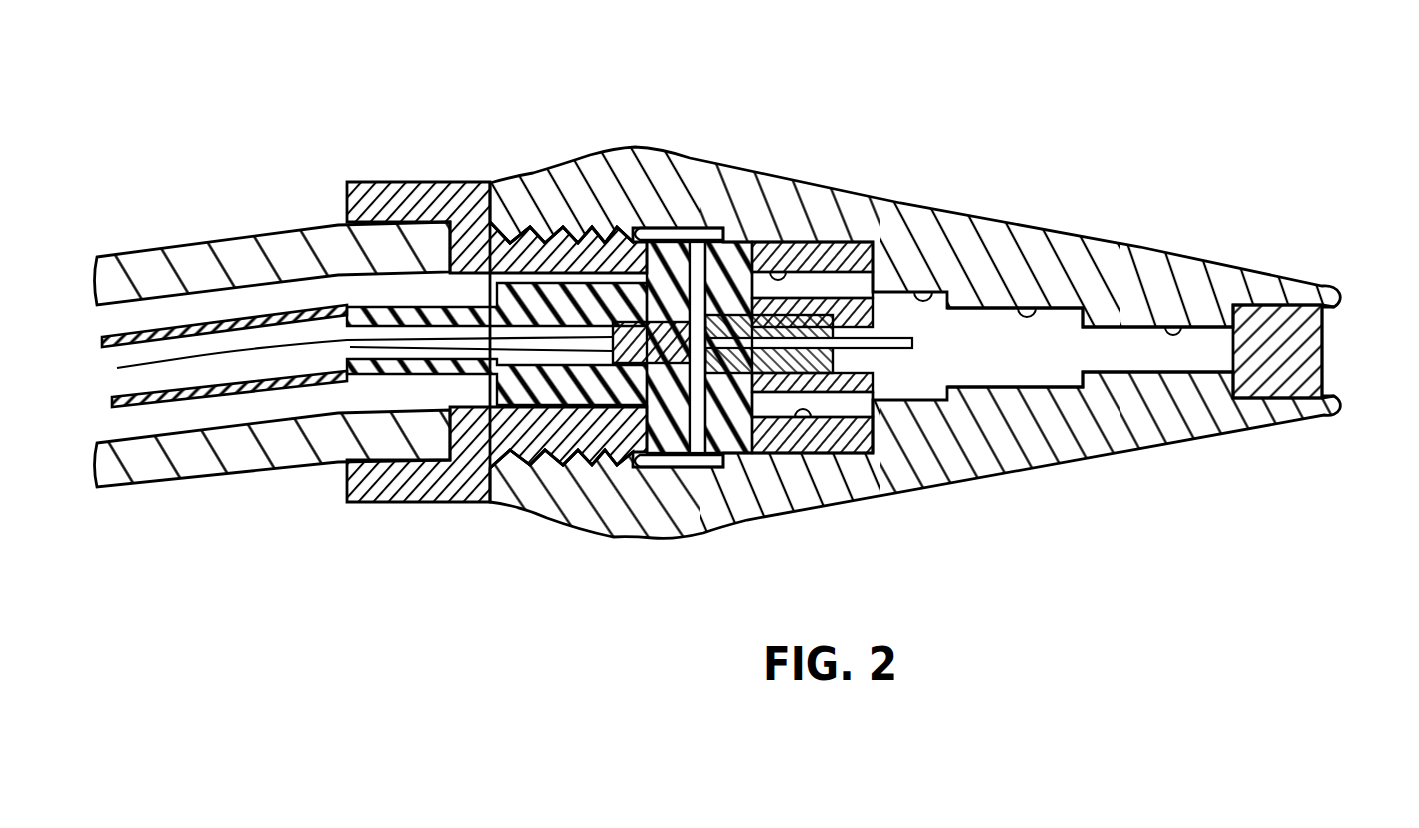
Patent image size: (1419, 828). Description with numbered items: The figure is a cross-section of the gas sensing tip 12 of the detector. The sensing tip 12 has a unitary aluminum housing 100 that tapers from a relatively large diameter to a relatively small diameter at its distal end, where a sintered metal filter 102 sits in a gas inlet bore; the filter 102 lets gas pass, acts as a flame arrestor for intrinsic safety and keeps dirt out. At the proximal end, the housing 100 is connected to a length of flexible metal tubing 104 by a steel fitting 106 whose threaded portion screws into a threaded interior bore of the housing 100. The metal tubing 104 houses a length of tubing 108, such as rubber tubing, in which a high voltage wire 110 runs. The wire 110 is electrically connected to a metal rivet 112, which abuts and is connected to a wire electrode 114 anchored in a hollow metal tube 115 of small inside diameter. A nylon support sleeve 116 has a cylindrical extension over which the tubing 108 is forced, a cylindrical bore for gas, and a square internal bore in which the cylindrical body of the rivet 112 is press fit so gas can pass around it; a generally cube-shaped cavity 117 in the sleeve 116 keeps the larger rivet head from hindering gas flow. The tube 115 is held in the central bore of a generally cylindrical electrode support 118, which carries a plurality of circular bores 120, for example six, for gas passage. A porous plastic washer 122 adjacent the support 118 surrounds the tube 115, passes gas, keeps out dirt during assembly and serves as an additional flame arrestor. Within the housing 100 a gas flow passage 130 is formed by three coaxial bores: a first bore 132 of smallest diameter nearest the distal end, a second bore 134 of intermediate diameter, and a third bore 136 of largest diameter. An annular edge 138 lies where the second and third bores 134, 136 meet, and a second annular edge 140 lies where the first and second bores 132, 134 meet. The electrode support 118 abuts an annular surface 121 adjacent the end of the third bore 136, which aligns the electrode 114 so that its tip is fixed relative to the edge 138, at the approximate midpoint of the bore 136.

The gas sensing tip 12 is at (200, 162).
The unitary aluminum housing 100 is at (871, 210).
The sintered metal filter 102 is at (1327, 348).
The flexible metal tubing 104 is at (180, 246).
The steel fitting 106 is at (405, 182).
The tubing 108 is at (127, 335).
The high voltage wire 110 is at (120, 368).
The metal rivet 112 is at (499, 462).
The wire electrode 114 is at (915, 346).
The hollow metal tube 115 is at (845, 355).
The nylon support sleeve 116 is at (492, 295).
The cube-shaped cavity 117 is at (695, 240).
The electrode support 118 is at (876, 245).
The circular bores 120 is at (795, 272).
The annular surface 121 is at (878, 447).
The porous plastic washer 122 is at (745, 245).
The gas flow passage 130 is at (1013, 365).
The first bore 132 is at (1180, 323).
The second bore 134 is at (1040, 308).
The third bore 136 is at (945, 300).
The annular edge 138 is at (947, 318).
The second annular edge 140 is at (1082, 326).